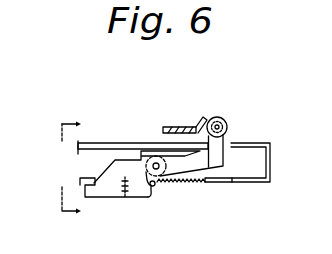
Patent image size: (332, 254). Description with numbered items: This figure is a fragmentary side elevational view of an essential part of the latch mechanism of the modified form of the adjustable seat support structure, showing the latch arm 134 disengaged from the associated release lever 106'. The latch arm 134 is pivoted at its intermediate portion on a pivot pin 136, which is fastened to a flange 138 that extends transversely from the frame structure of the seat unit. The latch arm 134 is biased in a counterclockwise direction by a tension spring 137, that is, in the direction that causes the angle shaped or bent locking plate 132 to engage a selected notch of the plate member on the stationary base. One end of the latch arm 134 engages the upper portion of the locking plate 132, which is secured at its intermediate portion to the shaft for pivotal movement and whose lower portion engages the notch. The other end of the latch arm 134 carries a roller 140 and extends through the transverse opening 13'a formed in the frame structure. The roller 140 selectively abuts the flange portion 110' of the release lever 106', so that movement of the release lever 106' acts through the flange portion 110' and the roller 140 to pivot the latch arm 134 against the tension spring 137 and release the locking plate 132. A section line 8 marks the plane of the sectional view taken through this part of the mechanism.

The section line 8- 8 is at (73, 169).
The locking plate 132 is at (88, 178).
The flange 138 is at (146, 172).
The release lever 106' is at (157, 115).
The flange portion 110' is at (198, 104).
The roller 140 is at (228, 121).
The latch arm 134 is at (203, 167).
The tension spring 137 is at (182, 185).
The pivot pin 136 is at (151, 187).
The transverse opening 13'a is at (264, 181).